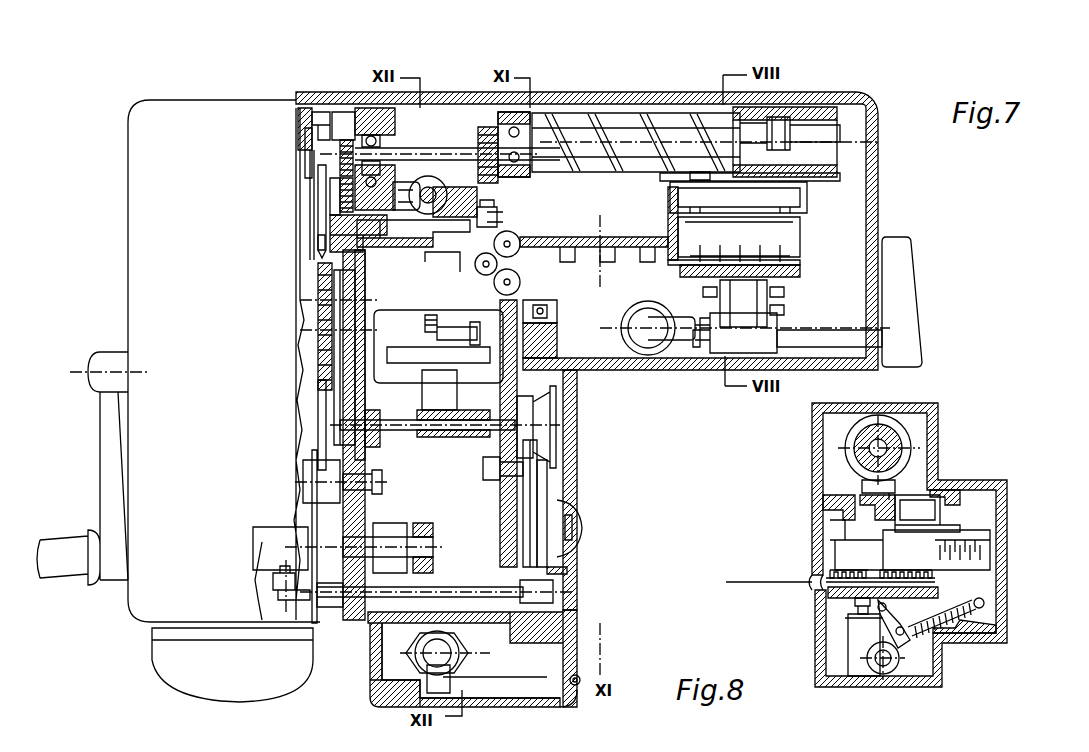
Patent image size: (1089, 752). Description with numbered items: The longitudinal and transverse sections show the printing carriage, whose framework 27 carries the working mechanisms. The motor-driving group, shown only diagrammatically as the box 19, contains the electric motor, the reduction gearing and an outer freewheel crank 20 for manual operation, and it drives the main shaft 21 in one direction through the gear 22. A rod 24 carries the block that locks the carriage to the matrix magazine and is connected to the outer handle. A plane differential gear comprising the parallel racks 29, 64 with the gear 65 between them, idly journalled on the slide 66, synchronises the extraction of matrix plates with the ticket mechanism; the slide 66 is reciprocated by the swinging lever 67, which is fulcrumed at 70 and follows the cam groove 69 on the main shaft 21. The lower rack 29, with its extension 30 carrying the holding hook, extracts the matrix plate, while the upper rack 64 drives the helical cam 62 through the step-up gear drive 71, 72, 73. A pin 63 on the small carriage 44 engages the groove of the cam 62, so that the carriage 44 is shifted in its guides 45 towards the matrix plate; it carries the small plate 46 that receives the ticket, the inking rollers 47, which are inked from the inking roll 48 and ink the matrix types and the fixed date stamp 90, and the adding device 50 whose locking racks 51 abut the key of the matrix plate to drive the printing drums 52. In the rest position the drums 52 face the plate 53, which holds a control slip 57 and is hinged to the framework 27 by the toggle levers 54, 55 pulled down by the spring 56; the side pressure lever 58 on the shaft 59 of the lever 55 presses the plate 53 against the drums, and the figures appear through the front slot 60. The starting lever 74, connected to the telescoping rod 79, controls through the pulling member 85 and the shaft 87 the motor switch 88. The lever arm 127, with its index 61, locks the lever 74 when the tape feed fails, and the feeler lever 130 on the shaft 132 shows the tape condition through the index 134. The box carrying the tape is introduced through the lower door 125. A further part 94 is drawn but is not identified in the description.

In FIG. 7, the motor-driving group box 19 is at (140, 212).
In FIG. 7, the outer freewheel crank 20 is at (48, 538).
In FIG. 7, the main shaft 21 is at (403, 364).
In FIG. 7, the gear 22 is at (325, 352).
In FIG. 7, the rod 24 is at (426, 178).
In FIG. 7, the framework 27 is at (878, 152).
In FIG. 8, the framework 27 is at (1008, 601).
In FIG. 7, the rack 29 is at (330, 222).
In FIG. 7, the extension 30 is at (402, 210).
In FIG. 7, the small carriage 44 is at (660, 236).
In FIG. 8, the small carriage 44 is at (920, 508).
In FIG. 8, the guides 45 is at (852, 498).
In FIG. 7, the small plate 46 is at (610, 242).
In FIG. 7, the inking rollers 47 is at (497, 256).
In FIG. 7, the inking roll 48 is at (520, 288).
In FIG. 7, the adding device 50 is at (790, 232).
In FIG. 8, the adding device 50 is at (905, 540).
In FIG. 8, the controlling and locking racks 51 is at (990, 546).
In FIG. 8, the printing drums 52 is at (895, 568).
In FIG. 7, the plate 53 is at (805, 272).
In FIG. 8, the plate 53 is at (840, 598).
In FIG. 7, the toggle lever 54 is at (770, 304).
In FIG. 8, the toggle lever 54 is at (892, 626).
In FIG. 7, the toggle lever 55 is at (723, 345).
In FIG. 8, the toggle lever 55 is at (905, 640).
In FIG. 8, the spring 56 is at (962, 637).
In FIG. 8, the control slip 57 is at (744, 592).
In FIG. 7, the side pressure lever 58 is at (905, 292).
In FIG. 7, the shaft 59 is at (815, 342).
In FIG. 8, the shaft 59 is at (886, 672).
In FIG. 8, the front slot 60 is at (812, 580).
In FIG. 7, the index 61 is at (584, 522).
In FIG. 7, the cam 62 is at (630, 125).
In FIG. 8, the cam 62 is at (880, 426).
In FIG. 7, the pin 63 is at (712, 170).
In FIG. 8, the pin 63 is at (866, 482).
In FIG. 7, the rack 64 is at (312, 125).
In FIG. 7, the gear 65 is at (330, 190).
In FIG. 7, the slide 66 is at (322, 212).
In FIG. 7, the swinging lever 67 is at (318, 242).
In FIG. 7, the cam groove 69 is at (340, 398).
In FIG. 7, the fulcrum 70 is at (303, 484).
In FIG. 7, the gear drive 71 is at (340, 157).
In FIG. 7, the gear drive 72 is at (500, 176).
In FIG. 7, the gear drive 73 is at (488, 126).
In FIG. 7, the starting lever 74 is at (547, 478).
In FIG. 7, the telescoping rod 79 is at (560, 326).
In FIG. 7, the pulling member 85 is at (523, 512).
In FIG. 7, the shaft 87 is at (470, 586).
In FIG. 7, the switch 88 is at (275, 582).
In FIG. 7, the fixed date stamp 90 is at (478, 216).
In FIG. 7, the housing boss 94 is at (330, 546).
In FIG. 7, the lower door 125 is at (378, 690).
In FIG. 7, the lever arm 127 is at (567, 572).
In FIG. 7, the feeler lever 130 is at (452, 386).
In FIG. 7, the shaft 132 is at (400, 437).
In FIG. 7, the index 134 is at (556, 428).